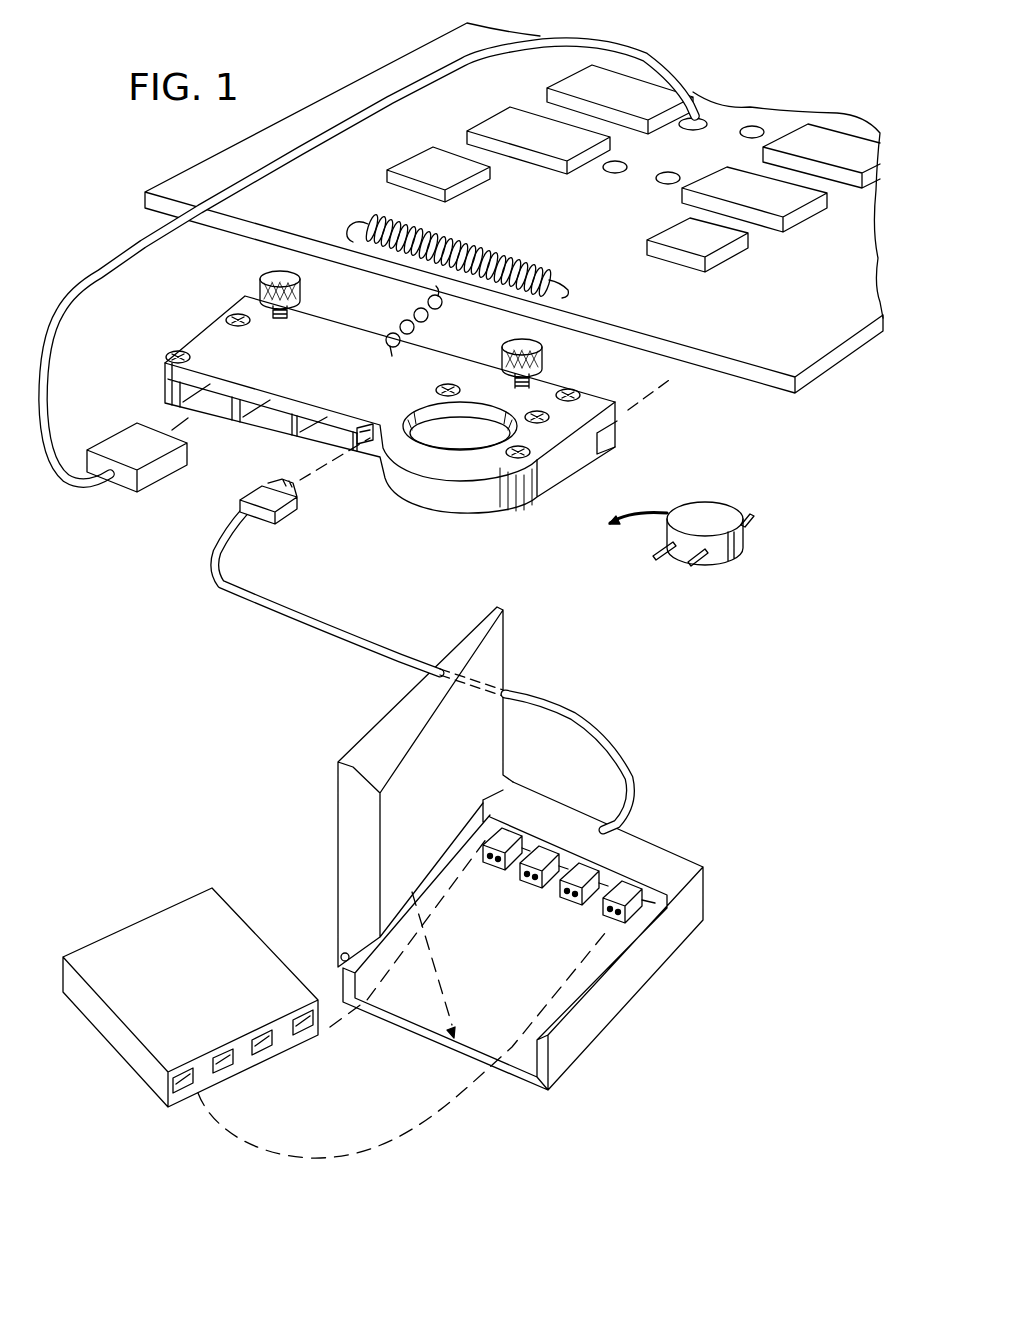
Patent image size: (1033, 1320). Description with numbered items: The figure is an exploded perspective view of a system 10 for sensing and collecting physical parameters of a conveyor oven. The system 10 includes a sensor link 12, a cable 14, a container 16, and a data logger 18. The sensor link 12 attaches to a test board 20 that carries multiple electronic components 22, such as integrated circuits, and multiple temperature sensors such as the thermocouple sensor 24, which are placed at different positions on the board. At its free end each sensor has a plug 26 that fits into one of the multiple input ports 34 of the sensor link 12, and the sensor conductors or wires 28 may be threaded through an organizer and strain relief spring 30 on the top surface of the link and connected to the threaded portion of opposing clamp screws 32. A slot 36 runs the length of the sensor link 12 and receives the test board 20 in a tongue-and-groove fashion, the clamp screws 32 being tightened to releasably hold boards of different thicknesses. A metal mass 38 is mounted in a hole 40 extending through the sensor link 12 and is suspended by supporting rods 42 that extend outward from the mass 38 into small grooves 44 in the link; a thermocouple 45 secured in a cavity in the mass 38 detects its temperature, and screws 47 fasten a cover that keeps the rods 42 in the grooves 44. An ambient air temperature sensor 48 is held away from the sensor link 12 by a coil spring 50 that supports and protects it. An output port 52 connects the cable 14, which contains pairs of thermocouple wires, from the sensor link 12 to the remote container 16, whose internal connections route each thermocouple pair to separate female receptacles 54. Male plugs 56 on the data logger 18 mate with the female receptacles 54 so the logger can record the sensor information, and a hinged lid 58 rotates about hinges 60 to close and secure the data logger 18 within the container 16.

The system 10 is at (753, 673).
The sensor link 12 is at (525, 513).
The cable 14 is at (567, 703).
The container 16 is at (682, 920).
The data logger 18 is at (133, 937).
The test board 20 is at (830, 356).
The electronic components 22 is at (814, 144).
The temperature sensor 24 is at (700, 110).
The plug 26 is at (160, 465).
The sensor conductors or wires 28 is at (124, 264).
The organizer and strain relief spring 30 is at (492, 249).
The clamp screws 32 is at (260, 292).
The input ports 34 is at (345, 412).
The slot 36 is at (607, 438).
The mass 38 is at (733, 546).
The hole 40 is at (449, 432).
The supporting rods 42 is at (748, 512).
The grooves 44 is at (469, 418).
The thermocouple 45 is at (613, 514).
The screws 47 is at (166, 357).
The ambient air temperature sensor 48 is at (435, 297).
The coil spring 50 is at (400, 331).
The output port 52 is at (366, 446).
The female receptacles 54 is at (640, 922).
The male plugs 56 is at (187, 1094).
The hinged lid 58 is at (398, 699).
The hinges 60 is at (340, 957).